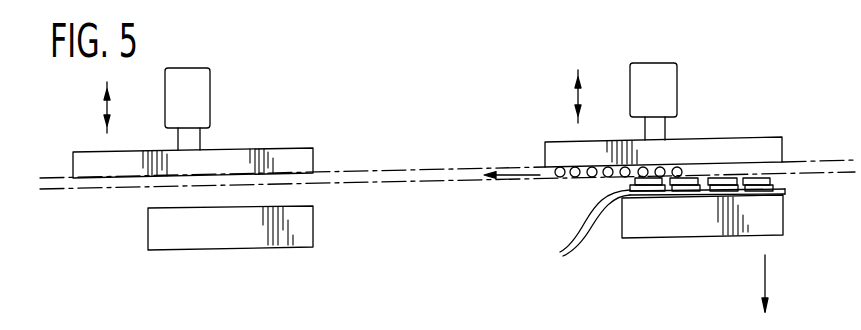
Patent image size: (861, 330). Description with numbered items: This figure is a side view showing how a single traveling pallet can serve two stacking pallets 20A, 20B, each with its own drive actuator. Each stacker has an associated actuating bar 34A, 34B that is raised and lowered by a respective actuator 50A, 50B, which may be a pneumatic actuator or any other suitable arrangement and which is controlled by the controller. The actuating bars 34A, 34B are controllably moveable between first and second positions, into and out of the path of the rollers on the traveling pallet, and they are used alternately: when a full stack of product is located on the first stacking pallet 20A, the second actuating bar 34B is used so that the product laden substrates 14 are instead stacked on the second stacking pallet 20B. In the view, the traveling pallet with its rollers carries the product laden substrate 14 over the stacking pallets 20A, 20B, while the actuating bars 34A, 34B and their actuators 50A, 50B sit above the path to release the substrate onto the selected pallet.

The product laden substrate 14 is at (659, 222).
The stacking pallet 20A is at (723, 238).
The second stacking pallet 20B is at (233, 250).
The actuating bar 34A is at (678, 137).
The actuating bar 34B is at (227, 150).
The actuator 50A is at (665, 103).
The actuator 50B is at (201, 103).